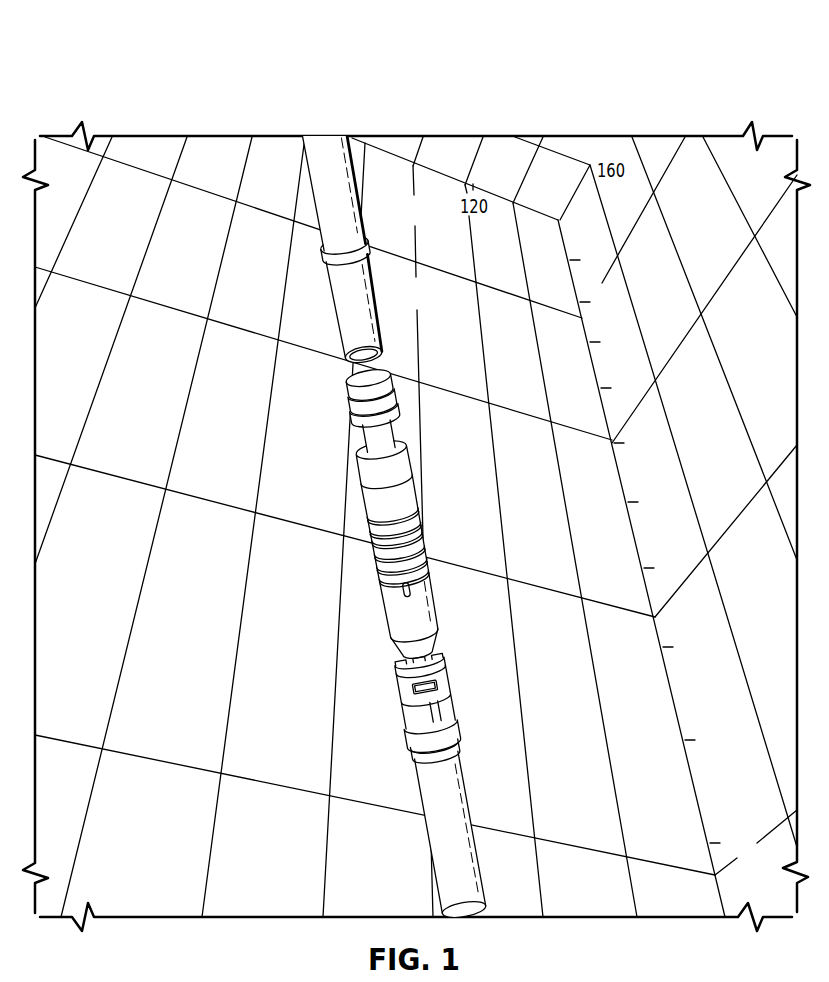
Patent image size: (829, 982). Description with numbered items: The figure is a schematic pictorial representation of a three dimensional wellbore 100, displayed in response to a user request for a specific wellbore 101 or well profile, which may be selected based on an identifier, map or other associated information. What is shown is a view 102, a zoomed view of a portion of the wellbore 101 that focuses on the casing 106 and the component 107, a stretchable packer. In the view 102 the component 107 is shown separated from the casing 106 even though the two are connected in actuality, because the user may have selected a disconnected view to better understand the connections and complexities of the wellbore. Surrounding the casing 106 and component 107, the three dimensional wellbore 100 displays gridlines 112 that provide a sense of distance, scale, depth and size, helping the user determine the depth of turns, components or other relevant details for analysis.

The three dimensional wellbore 100 is at (205, 69).
The wellbore 101 is at (387, 308).
The view 102 is at (233, 533).
The casing 106 is at (366, 229).
The component 107 is at (438, 608).
The gridlines 112 is at (714, 296).